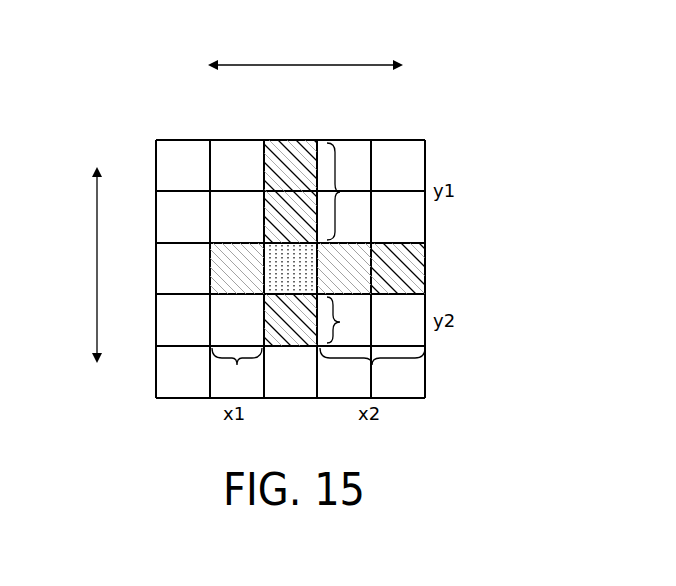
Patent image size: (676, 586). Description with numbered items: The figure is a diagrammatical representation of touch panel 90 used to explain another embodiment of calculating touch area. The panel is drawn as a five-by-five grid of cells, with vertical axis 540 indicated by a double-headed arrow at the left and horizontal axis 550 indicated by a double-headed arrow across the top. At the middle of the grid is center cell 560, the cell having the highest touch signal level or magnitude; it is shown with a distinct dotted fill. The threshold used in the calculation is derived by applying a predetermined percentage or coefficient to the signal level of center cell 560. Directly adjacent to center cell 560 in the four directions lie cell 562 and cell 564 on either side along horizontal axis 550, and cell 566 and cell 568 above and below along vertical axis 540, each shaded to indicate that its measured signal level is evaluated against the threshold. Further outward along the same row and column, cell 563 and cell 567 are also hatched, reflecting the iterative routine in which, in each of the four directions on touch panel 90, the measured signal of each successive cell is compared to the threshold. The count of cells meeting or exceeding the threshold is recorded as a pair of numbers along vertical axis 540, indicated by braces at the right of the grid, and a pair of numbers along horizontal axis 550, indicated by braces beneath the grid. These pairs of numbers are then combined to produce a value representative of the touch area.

The touch panel 90 is at (106, 109).
The vertical axis 540 is at (97, 257).
The horizontal axis 550 is at (305, 63).
The center cell 560 is at (305, 270).
The cell 562 is at (358, 258).
The outer right pixel 563 is at (407, 285).
The cell 564 is at (220, 287).
The cell 566 is at (275, 210).
The upper outer pixel 567 is at (287, 153).
The cell 568 is at (279, 337).